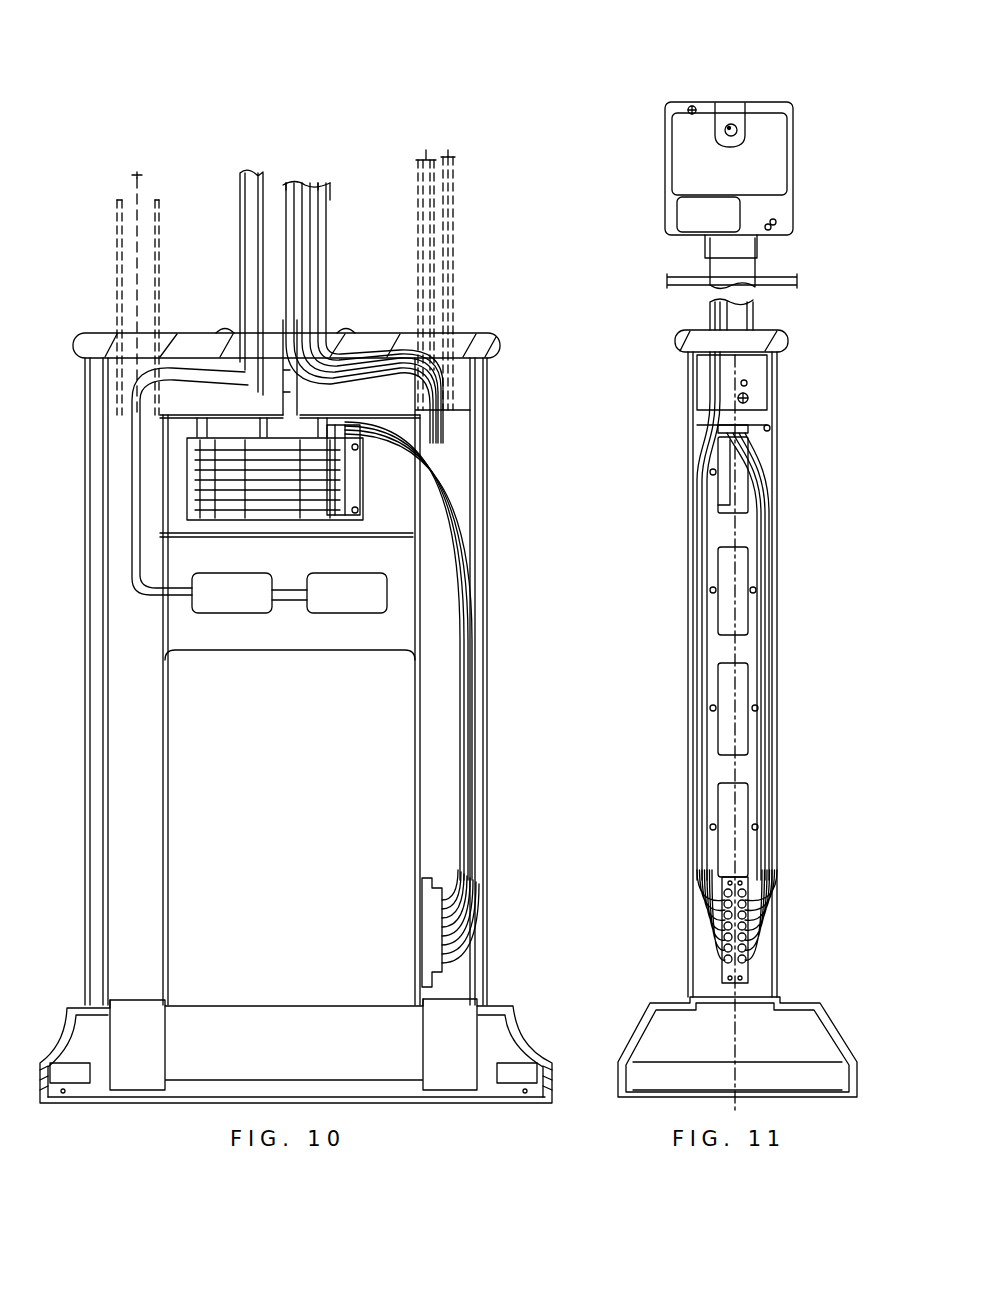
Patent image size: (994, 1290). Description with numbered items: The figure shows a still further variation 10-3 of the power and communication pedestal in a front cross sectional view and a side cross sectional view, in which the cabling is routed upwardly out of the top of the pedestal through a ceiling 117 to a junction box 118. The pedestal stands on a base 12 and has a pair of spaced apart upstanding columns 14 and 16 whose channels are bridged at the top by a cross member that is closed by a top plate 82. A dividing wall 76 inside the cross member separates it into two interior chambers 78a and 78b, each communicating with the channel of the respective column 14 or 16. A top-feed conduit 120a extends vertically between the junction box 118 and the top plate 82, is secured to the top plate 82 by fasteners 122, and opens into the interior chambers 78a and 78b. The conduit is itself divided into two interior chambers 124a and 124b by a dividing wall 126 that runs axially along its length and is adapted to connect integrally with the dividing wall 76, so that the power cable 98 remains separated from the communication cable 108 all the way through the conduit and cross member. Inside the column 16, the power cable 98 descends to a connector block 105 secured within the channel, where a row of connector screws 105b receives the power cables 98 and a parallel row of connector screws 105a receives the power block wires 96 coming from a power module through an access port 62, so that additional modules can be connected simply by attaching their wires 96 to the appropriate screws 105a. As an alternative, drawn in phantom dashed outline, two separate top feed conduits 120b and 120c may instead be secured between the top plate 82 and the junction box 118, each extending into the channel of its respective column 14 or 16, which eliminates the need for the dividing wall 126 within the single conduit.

In FIG. 10, the variation of the pedestal 10-3 is at (368, 66).
In FIG. 11, the variation of the pedestal 10-3 is at (648, 66).
In FIG. 10, the base 12 is at (518, 992).
In FIG. 11, the base 12 is at (737, 1047).
In FIG. 10, the column 14 is at (80, 776).
In FIG. 10, the column 16 is at (500, 786).
In FIG. 11, the column 16 is at (785, 772).
In FIG. 11, the access port 62 is at (748, 490).
In FIG. 10, the dividing wall 76 is at (297, 407).
In FIG. 10, the interior chamber 78a is at (188, 362).
In FIG. 10, the interior chamber 78b is at (362, 360).
In FIG. 10, the top plate 82 is at (498, 334).
In FIG. 11, the top plate 82 is at (785, 332).
In FIG. 10, the power block wires 96 is at (472, 661).
In FIG. 11, the power block wires 96 is at (767, 672).
In FIG. 10, the power cable 98 is at (313, 268).
In FIG. 11, the power cable 98 is at (697, 614).
In FIG. 10, the connector block 105 is at (433, 900).
In FIG. 11, the connector block 105 is at (748, 978).
In FIG. 11, the connector screws 105a is at (746, 893).
In FIG. 11, the connector screws 105b is at (727, 893).
In FIG. 10, the communication cable 108 is at (143, 178).
In FIG. 11, the ceiling 117 is at (778, 277).
In FIG. 11, the junction box 118 is at (682, 102).
In FIG. 10, the top-feed conduit 120a is at (331, 204).
In FIG. 11, the top-feed conduit 120a is at (715, 252).
In FIG. 10, the top feed conduit 120b is at (117, 228).
In FIG. 10, the top feed conduit 120c is at (452, 205).
In FIG. 10, the fasteners 122 is at (222, 328).
In FIG. 10, the interior chamber 124a is at (267, 188).
In FIG. 10, the interior chamber 124b is at (320, 179).
In FIG. 10, the dividing wall 126 is at (284, 190).